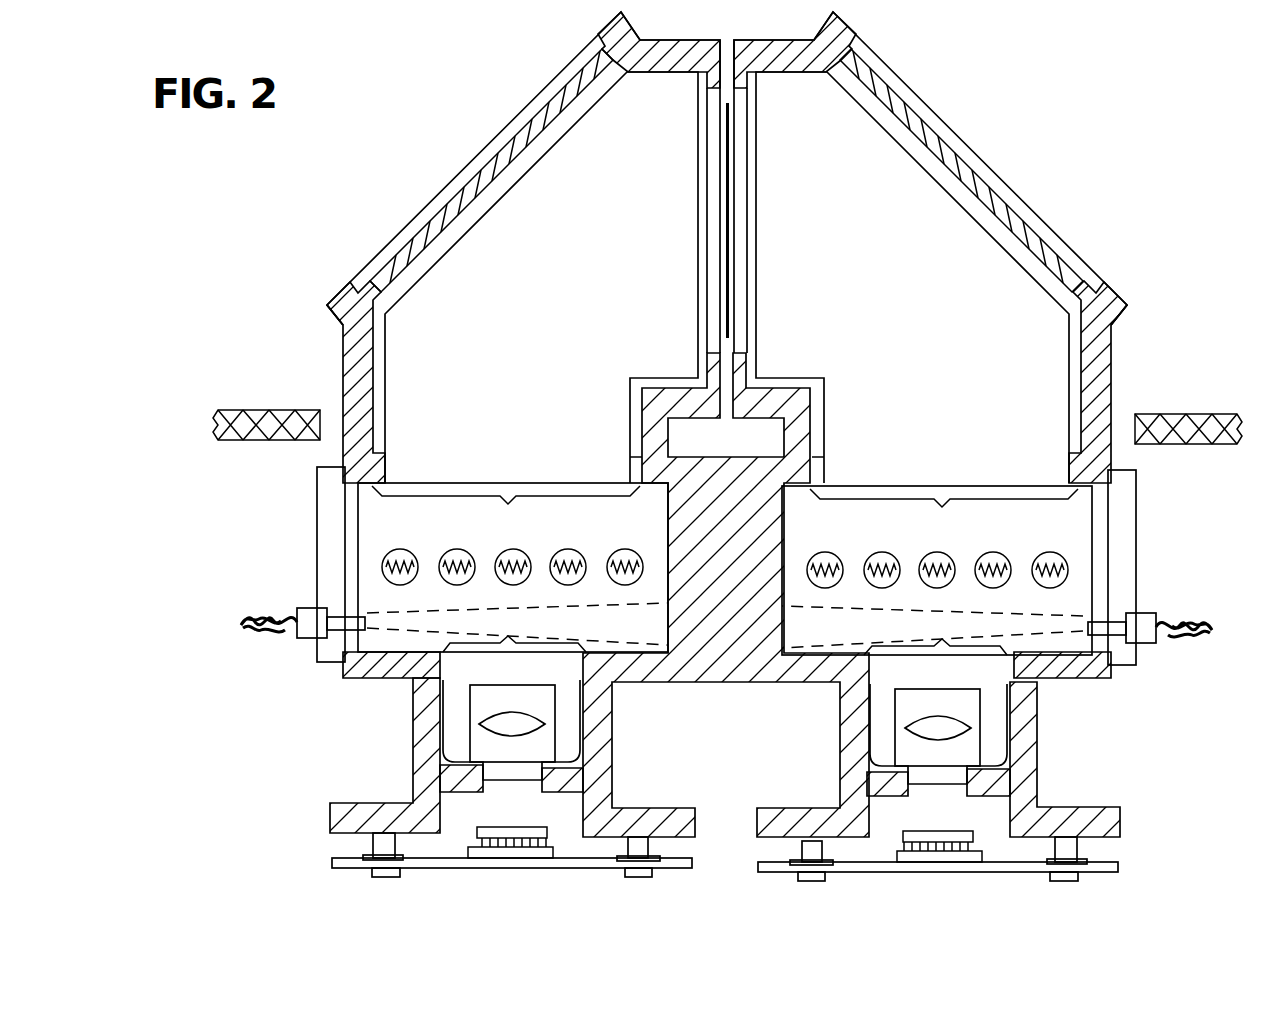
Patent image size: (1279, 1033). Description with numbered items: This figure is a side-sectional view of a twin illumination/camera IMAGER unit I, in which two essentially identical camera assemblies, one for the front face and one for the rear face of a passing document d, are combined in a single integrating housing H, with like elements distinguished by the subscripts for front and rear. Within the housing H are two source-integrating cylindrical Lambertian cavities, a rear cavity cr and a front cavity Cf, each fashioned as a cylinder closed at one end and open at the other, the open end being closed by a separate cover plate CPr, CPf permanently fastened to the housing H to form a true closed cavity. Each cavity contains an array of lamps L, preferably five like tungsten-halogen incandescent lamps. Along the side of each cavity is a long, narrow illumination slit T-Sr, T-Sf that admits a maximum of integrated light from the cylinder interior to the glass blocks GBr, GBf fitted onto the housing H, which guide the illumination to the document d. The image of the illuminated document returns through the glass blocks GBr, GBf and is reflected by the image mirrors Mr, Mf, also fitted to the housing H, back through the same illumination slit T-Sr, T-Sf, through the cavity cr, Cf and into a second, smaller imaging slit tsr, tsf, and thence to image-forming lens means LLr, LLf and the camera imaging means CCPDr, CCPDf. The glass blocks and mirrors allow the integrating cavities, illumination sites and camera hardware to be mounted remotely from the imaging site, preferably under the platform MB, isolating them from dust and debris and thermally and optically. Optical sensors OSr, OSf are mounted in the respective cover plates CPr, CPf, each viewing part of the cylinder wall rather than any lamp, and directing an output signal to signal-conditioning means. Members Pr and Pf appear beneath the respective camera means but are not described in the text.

The IMAGER unit I is at (966, 103).
The document d is at (735, 170).
The rear image mirror Mr is at (410, 238).
The front image mirror Mf is at (1048, 243).
The rear glass block GBr is at (528, 205).
The front glass block GBf is at (935, 212).
The integrating housing H is at (337, 300).
The platform MB is at (268, 410).
The rear cylindrical cavity cr is at (367, 515).
The front cylindrical cavity Cf is at (1082, 527).
The rear cover plate CPr is at (328, 535).
The front cover plate CPf is at (1127, 595).
The lamps L is at (383, 567).
The rear optical sensor OSr is at (312, 640).
The front optical sensor OSf is at (1152, 643).
The rear illumination slit T-Sr is at (506, 513).
The front illumination slit T-Sf is at (944, 515).
The rear imaging slit tsr is at (517, 627).
The front imaging slit tsf is at (932, 630).
The rear lens means LLr is at (470, 725).
The front lens means LLf is at (985, 725).
The rear imaging means (CCPD) CCPDr is at (490, 826).
The front imaging means (CCPD) CCPDf is at (965, 830).
The rear circuit board Pr is at (338, 858).
The front circuit board Pf is at (1118, 860).